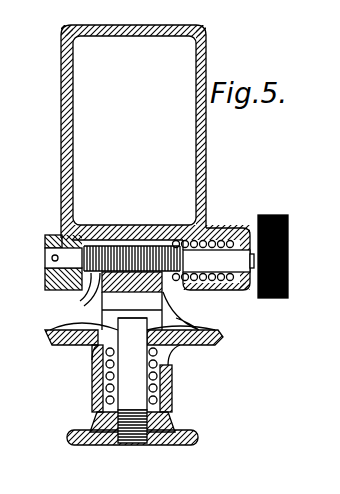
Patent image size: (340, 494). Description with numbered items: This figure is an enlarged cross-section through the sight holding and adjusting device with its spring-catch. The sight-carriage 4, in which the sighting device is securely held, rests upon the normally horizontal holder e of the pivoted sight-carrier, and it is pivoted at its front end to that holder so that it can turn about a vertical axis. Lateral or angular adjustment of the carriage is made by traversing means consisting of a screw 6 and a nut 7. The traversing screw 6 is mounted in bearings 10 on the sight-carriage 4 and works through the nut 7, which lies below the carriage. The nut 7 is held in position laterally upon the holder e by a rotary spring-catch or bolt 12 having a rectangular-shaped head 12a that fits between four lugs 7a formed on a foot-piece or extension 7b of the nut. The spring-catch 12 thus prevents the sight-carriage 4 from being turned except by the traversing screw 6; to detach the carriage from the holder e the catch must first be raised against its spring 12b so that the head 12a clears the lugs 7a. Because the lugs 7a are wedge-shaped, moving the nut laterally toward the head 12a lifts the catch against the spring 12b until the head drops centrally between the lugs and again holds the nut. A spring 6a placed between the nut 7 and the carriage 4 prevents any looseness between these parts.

The sight-carriage 4 is at (127, 233).
The traversing screw 6 is at (289, 263).
The spring 6a is at (222, 230).
The nut 7 is at (151, 289).
The lugs 7a is at (201, 353).
The foot-piece 7b is at (182, 308).
The bearings 10 is at (63, 287).
The spring-catch 12 is at (131, 380).
The head 12a is at (132, 320).
The spring 12b is at (95, 383).
The holder e is at (223, 338).